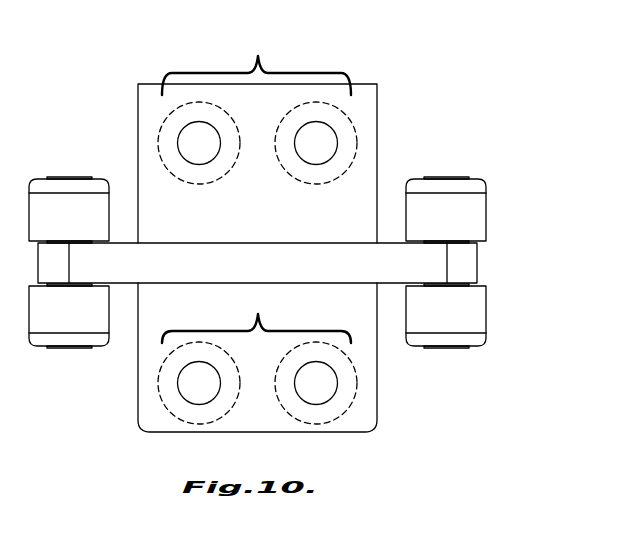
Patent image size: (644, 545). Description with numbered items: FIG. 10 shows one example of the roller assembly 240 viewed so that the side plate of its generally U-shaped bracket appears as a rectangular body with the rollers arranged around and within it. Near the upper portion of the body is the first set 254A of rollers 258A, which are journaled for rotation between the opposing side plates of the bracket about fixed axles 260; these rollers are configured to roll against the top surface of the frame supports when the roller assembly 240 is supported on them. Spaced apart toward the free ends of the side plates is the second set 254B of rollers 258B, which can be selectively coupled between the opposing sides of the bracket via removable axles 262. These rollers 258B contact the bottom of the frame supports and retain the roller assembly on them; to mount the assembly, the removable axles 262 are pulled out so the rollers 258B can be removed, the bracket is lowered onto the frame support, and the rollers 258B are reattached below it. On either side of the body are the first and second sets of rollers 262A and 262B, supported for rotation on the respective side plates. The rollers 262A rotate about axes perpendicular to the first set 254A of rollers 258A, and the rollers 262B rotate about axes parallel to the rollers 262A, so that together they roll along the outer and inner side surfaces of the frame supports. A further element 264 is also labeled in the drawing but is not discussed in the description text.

The tool assembly 240 is at (405, 55).
The first set of openings 254A is at (256, 64).
The second set of openings 254B is at (256, 315).
The first recess 258A is at (172, 116).
The second recess 258B is at (170, 416).
The first opening 260 is at (187, 137).
The second opening 262 is at (185, 390).
The right roller 262A is at (455, 347).
The left roller 262B is at (0, 102).
The roller flange 264 is at (32, 338).